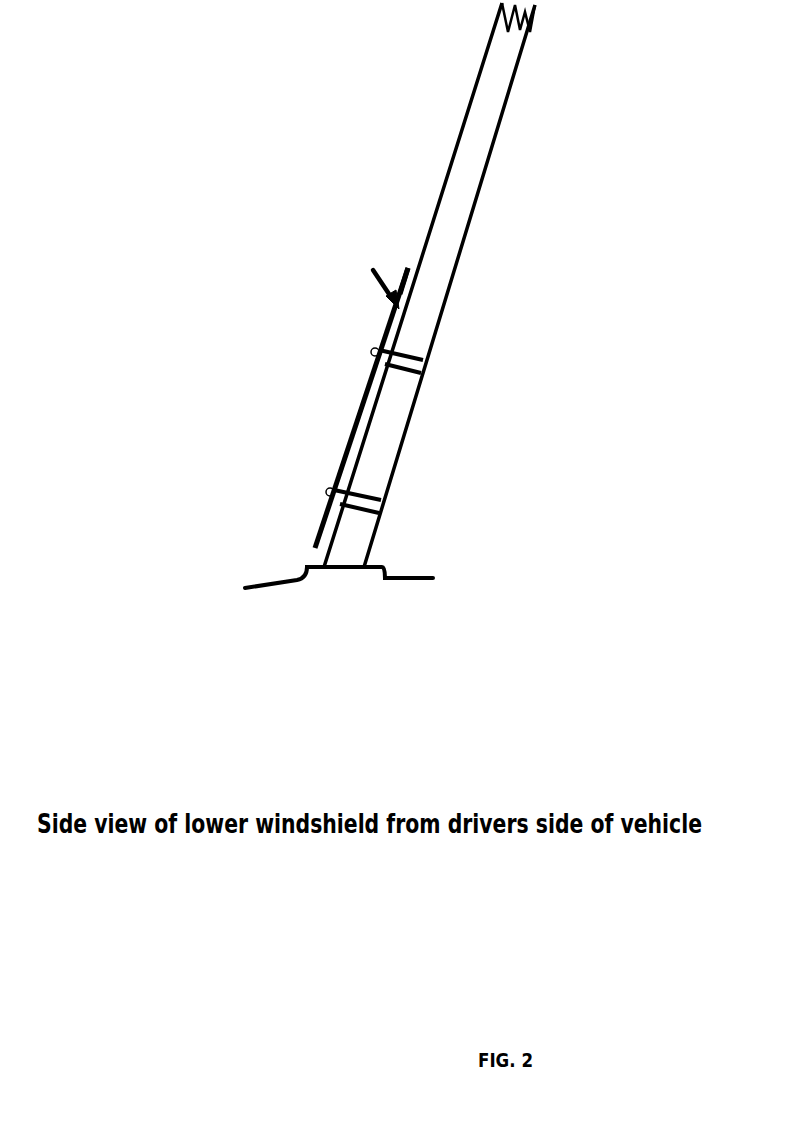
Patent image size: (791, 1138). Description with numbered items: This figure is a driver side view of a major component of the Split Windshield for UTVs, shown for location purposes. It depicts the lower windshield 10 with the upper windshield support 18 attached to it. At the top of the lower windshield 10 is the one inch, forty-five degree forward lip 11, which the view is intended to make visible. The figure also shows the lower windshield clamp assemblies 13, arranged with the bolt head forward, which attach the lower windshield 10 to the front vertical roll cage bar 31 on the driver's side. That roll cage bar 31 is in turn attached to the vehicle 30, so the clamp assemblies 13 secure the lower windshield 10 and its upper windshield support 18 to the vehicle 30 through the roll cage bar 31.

The lower windshield 10 is at (358, 410).
The 1 inch, 45 degree forward lip 11 is at (372, 275).
The lower windshield clamp assembly 13 is at (425, 367).
The upper windshield support 18 is at (405, 282).
The vehicle 30 is at (336, 641).
The front vertical roll cage bar driver's side 31 is at (462, 200).